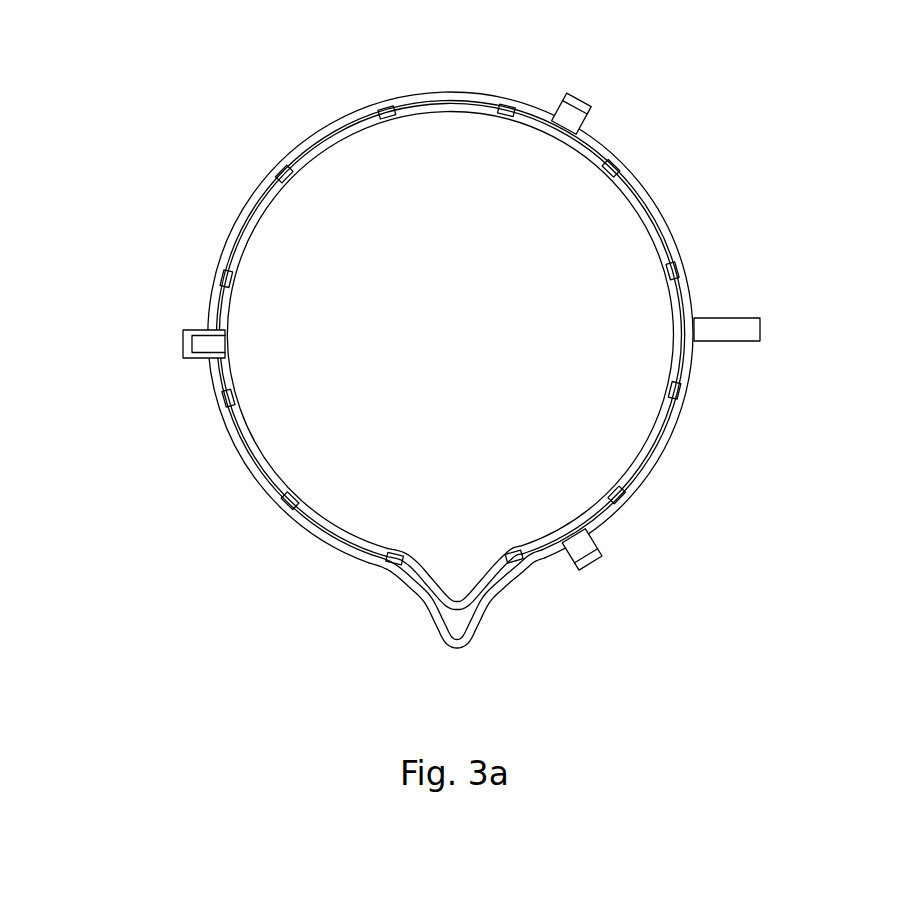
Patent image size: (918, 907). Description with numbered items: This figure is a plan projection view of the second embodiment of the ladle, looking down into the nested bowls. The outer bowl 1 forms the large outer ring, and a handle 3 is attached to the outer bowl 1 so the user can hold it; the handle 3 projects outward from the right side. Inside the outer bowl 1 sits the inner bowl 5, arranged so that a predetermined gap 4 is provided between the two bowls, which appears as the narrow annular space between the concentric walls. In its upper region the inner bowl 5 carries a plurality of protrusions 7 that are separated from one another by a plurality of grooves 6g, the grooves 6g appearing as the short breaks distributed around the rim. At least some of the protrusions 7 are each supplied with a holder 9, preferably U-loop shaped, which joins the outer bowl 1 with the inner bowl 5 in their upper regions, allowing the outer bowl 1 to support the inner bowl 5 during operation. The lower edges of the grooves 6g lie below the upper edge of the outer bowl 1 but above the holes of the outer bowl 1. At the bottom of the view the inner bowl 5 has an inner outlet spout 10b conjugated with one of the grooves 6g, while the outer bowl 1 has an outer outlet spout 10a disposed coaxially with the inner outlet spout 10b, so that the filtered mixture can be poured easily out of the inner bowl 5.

The outer bowl 1 is at (258, 192).
The gap 4 is at (234, 218).
The protrusions 7 is at (208, 311).
The holder 9 is at (584, 97).
The inner bowl 5 is at (607, 252).
The handle 3 is at (735, 330).
The grooves 6g is at (669, 440).
The outer outlet spout 10a is at (427, 613).
The inner outlet spout 10b is at (485, 574).